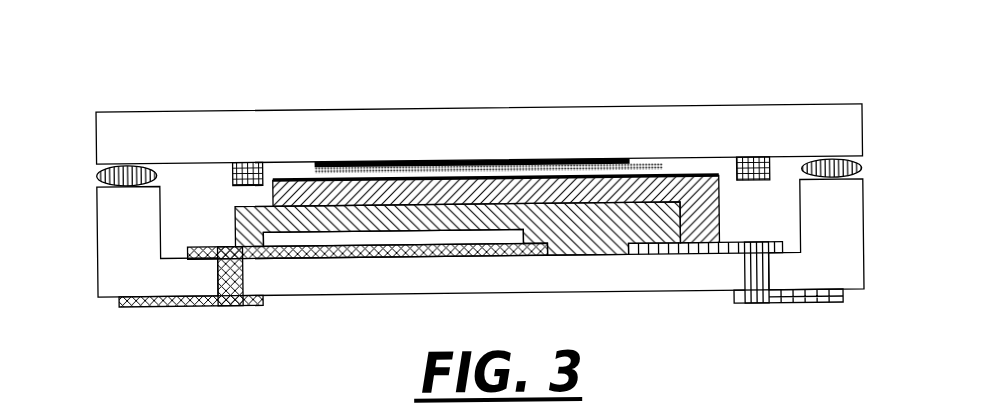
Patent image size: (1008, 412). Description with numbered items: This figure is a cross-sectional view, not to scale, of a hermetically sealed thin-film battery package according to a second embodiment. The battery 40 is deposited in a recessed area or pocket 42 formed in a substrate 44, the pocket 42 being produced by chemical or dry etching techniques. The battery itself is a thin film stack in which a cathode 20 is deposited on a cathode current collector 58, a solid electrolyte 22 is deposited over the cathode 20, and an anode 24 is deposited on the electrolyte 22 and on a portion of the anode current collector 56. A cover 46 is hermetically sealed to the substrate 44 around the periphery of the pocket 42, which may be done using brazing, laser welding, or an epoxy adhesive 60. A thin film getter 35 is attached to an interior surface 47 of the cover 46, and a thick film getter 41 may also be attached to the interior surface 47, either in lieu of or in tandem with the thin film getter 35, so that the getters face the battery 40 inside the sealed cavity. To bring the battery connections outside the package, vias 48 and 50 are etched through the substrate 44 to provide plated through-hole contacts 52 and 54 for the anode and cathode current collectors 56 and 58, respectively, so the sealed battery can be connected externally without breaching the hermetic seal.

The cathode 20 is at (312, 236).
The solid electrolyte 22 is at (563, 241).
The anode 24 is at (525, 190).
The thin film getter 35 is at (388, 159).
The battery 40 is at (632, 168).
The thick film getter 41 is at (242, 160).
The pocket 42 is at (192, 189).
The substrate 44 is at (412, 284).
The cover 46 is at (408, 141).
The interior surface 47 is at (700, 164).
The via 48 is at (757, 273).
The via 50 is at (222, 272).
The plated through-hole contact 52 is at (800, 306).
The plated through-hole contact 54 is at (159, 303).
The anode current collector 56 is at (707, 250).
The cathode current collector 58 is at (383, 259).
The epoxy adhesive 60 is at (97, 174).